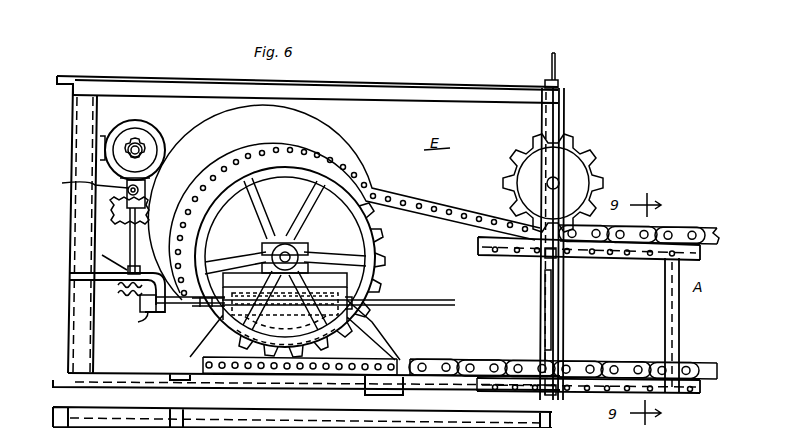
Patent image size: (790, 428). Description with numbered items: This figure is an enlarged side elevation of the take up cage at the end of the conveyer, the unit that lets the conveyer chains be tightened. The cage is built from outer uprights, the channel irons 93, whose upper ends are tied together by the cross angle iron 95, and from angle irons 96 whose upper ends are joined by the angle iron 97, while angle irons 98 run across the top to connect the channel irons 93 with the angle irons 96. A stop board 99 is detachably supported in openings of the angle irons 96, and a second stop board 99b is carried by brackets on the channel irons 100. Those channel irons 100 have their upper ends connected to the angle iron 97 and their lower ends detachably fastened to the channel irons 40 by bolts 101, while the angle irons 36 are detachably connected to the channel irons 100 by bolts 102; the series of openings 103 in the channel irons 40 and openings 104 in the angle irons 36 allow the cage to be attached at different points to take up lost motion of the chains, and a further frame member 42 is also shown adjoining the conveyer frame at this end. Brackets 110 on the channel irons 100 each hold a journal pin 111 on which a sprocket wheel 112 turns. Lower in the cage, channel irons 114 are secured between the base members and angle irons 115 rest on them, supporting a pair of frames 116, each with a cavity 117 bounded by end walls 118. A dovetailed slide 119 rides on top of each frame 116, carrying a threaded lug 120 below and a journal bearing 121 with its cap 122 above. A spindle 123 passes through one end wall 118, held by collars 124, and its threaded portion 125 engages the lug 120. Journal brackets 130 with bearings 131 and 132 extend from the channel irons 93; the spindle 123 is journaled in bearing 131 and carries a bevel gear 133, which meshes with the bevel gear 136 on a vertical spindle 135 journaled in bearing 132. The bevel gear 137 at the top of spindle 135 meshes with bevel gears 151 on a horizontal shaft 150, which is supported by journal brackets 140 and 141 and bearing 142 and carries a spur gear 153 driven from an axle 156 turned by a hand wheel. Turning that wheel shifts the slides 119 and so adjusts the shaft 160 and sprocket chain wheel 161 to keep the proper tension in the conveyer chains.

The angle irons 36 is at (660, 264).
The channel irons 40 is at (690, 393).
The vertical frame member 42 is at (680, 320).
The channel irons 93 is at (71, 322).
The cross angle iron 95 is at (64, 88).
The angle irons 96 is at (545, 342).
The angle iron 97 is at (541, 101).
The angle irons 98 is at (268, 99).
The stop board 99 is at (545, 301).
The stop board 99b is at (560, 88).
The channel irons 100 is at (562, 327).
The bolts 101 is at (554, 396).
The bolts 102 is at (544, 258).
The openings 103 is at (530, 381).
The openings 104 is at (498, 252).
The brackets 110 is at (562, 181).
The journal pin 111 is at (560, 187).
The sprocket wheels 112 is at (590, 158).
The channel irons 114 is at (193, 395).
The angle irons 115 is at (178, 368).
The frames 116 is at (362, 350).
The cavity 117 is at (345, 290).
The end walls 118 is at (228, 282).
The dovetailed slide 119 is at (285, 268).
The lug 120 is at (287, 312).
The journal bearing 121 is at (310, 270).
The cap 122 is at (308, 248).
The spindle 123 is at (176, 304).
The collars 124 is at (215, 298).
The threaded portion 125 is at (285, 330).
The journal brackets 130 is at (98, 275).
The journal bearing 131 is at (146, 317).
The journal bearing 132 is at (137, 265).
The bevel gear 133 is at (142, 303).
The vertical spindle 135 is at (113, 252).
The bevel gear 136 is at (120, 289).
The bevel gear 137 is at (150, 197).
The journal bracket 140 is at (105, 210).
The journal bracket 141 is at (105, 138).
The journal bearing 142 is at (143, 210).
The horizontal shaft 150 is at (78, 181).
The bevel gears 151 is at (155, 128).
The spur gear 153 is at (150, 183).
The axle 156 is at (143, 146).
The shaft 160 is at (285, 252).
The sprocket chain wheel 161 is at (386, 237).